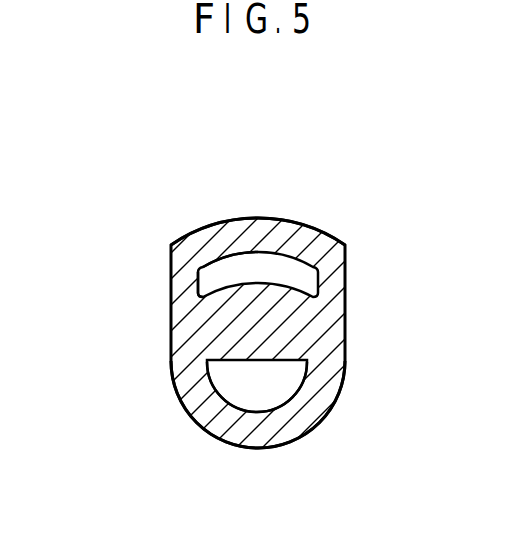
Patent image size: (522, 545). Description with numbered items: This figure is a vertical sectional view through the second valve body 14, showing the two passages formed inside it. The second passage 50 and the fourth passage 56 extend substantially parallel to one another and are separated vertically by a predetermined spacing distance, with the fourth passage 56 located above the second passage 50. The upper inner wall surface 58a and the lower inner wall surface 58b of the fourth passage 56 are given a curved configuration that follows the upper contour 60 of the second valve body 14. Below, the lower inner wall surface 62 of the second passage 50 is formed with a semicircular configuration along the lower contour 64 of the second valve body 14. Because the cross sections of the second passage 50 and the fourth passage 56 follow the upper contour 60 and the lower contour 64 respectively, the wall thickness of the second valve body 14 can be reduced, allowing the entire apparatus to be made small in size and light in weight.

The second valve body 14 is at (337, 304).
The second passage 50 is at (283, 381).
The fourth passage 56 is at (273, 220).
The upper inner wall surface 58a is at (223, 262).
The lower inner wall surface 58b is at (200, 293).
The upper contour 60 is at (265, 266).
The lower inner wall surface 62 is at (240, 396).
The lower contour 64 is at (262, 449).